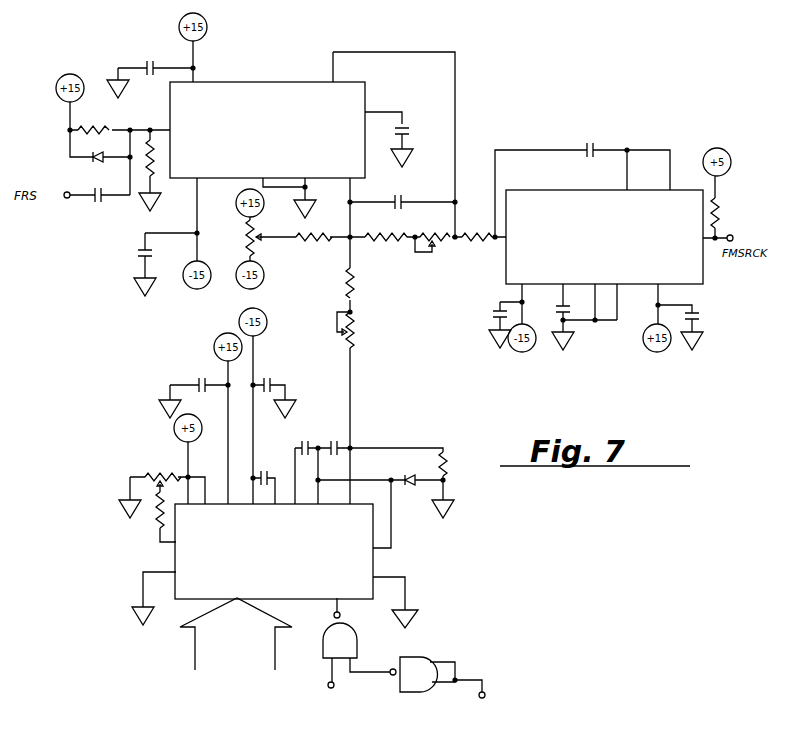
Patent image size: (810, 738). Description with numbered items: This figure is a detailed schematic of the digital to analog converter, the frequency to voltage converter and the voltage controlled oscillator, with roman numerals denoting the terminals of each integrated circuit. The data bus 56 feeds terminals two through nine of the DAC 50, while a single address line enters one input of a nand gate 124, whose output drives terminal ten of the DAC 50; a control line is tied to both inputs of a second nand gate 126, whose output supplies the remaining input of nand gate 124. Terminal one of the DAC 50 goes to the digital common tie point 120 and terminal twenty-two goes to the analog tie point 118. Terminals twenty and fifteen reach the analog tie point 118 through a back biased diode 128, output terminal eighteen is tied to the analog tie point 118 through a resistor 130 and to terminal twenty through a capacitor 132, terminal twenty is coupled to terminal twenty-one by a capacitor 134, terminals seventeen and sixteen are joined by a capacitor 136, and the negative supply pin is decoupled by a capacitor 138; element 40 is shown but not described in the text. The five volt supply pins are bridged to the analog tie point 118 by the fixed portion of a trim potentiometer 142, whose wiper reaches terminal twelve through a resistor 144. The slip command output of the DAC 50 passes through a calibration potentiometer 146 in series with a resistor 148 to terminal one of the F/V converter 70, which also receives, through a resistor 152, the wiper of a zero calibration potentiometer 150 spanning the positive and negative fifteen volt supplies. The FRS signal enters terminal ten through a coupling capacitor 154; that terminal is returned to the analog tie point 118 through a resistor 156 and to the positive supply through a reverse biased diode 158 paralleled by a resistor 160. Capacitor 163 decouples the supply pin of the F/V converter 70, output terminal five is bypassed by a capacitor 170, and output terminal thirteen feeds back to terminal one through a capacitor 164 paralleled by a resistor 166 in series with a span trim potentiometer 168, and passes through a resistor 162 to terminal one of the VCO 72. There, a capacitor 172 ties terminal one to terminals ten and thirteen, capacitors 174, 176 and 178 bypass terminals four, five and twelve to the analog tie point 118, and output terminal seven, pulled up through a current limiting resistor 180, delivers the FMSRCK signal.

The capacitor 40 is at (200, 370).
The DAC 50 is at (388, 566).
The data bus 56 is at (225, 676).
The F/V converter 70 is at (275, 80).
The voltage control oscillator circuit 72 is at (700, 278).
The analog tie point 118 is at (115, 88).
The reference digital common tie point 120 is at (420, 622).
The nand gate 124 is at (358, 638).
The nand gate 126 is at (430, 656).
The back biased diode 128 is at (414, 488).
The resistor 130 is at (447, 462).
The capacitor 132 is at (336, 440).
The capacitor 134 is at (300, 444).
The capacitor 136 is at (262, 474).
The capacitor 138 is at (267, 376).
The trim potentiometer 142 is at (162, 470).
The resistor 144 is at (148, 530).
The potentiometer 146 is at (355, 336).
The resistor 148 is at (353, 283).
The potentiometer 150 is at (245, 242).
The resistor 152 is at (310, 242).
The coupling capacitor 154 is at (92, 204).
The resistor 156 is at (152, 180).
The reverse biased diode 158 is at (90, 162).
The resistor 160 is at (100, 123).
The resistor 162 is at (488, 243).
The capacitor 163 is at (148, 54).
The capacitor 164 is at (400, 200).
The resistor 166 is at (368, 242).
The span trim potentiometer 168 is at (442, 248).
The capacitor 170 is at (404, 126).
The capacitor 172 is at (592, 142).
The capacitor 174 is at (497, 314).
The capacitor 176 is at (559, 309).
The capacitor 178 is at (700, 318).
The current limiting resistor 180 is at (720, 210).